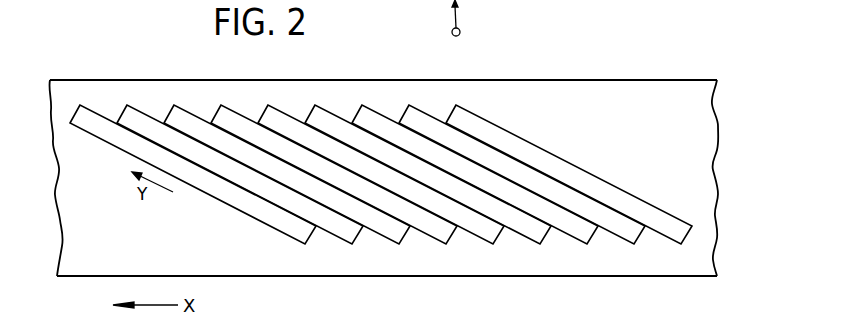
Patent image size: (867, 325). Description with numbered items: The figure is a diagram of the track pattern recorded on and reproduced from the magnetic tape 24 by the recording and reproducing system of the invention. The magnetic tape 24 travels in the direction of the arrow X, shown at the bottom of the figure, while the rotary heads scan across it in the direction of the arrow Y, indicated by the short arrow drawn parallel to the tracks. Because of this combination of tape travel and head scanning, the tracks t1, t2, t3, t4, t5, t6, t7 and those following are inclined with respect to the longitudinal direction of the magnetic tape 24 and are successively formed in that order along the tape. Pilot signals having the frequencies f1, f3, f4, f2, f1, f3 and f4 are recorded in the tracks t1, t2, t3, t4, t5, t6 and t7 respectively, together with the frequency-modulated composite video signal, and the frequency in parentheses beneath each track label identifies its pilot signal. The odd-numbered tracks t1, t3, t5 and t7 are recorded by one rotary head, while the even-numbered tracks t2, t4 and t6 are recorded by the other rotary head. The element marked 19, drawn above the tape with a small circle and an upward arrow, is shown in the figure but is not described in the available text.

The magnetic head 19 is at (460, 31).
The magnetic tape 24 is at (338, 81).
The track t1 is at (332, 230).
The track t2 is at (380, 232).
The track t3 is at (441, 230).
The track t4 is at (478, 232).
The track t5 is at (547, 232).
The track t6 is at (597, 232).
The track t7 is at (643, 230).